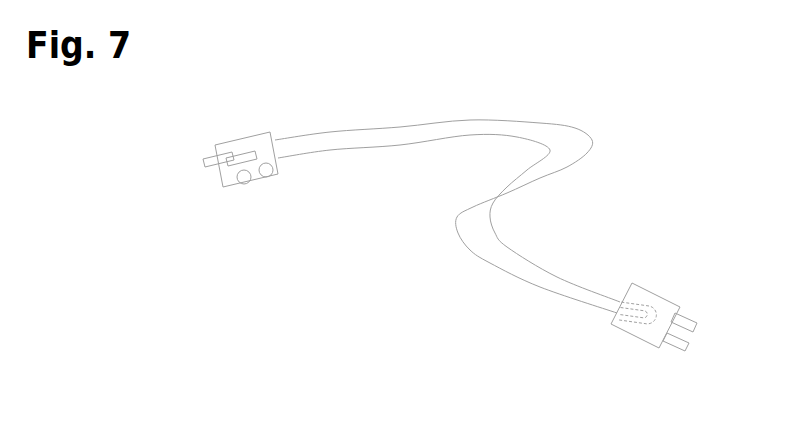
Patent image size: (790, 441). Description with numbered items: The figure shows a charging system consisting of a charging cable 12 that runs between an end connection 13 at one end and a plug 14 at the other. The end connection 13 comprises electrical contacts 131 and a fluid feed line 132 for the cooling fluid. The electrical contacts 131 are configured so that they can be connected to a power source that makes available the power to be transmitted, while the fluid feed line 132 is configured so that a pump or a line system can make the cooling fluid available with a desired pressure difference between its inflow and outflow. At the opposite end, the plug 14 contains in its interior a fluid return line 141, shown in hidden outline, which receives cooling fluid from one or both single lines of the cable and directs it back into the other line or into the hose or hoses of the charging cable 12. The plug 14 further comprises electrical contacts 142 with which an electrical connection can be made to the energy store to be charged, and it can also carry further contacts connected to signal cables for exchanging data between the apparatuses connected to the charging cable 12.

The charging cable 12 is at (400, 137).
The end connection 13 is at (228, 161).
The electrical contacts 131 is at (233, 167).
The fluid feed line 132 is at (265, 178).
The plug 14 is at (658, 328).
The fluid return line 141 is at (643, 318).
The electrical contacts 142 is at (687, 323).